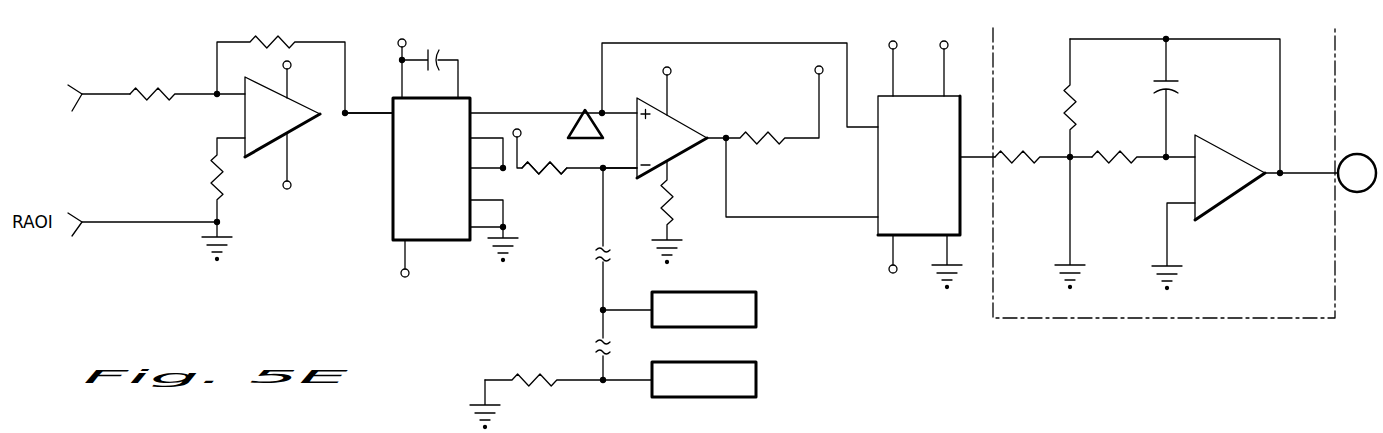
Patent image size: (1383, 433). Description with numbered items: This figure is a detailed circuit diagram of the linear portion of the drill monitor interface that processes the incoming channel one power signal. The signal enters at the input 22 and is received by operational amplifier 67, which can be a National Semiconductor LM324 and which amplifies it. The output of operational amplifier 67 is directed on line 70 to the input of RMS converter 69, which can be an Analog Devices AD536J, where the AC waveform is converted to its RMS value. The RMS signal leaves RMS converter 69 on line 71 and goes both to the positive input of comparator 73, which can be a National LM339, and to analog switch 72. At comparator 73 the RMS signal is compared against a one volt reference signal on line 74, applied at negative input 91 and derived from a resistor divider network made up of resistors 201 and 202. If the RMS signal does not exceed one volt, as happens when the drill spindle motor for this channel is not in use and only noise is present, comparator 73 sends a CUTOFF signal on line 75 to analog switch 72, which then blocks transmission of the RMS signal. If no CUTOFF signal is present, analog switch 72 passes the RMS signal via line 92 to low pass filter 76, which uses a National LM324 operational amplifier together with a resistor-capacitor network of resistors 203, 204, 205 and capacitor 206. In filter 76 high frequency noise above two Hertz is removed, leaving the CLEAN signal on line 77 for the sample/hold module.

The channel 1 power input signal 22 is at (85, 93).
The operational amplifier 67 is at (258, 150).
The line 70 is at (368, 113).
The RMS converter 69 is at (393, 205).
The line 71 is at (576, 108).
The line 74 is at (572, 168).
The resistor 201 is at (587, 170).
The resistor 202 is at (527, 385).
The comparator 73 is at (690, 128).
The negative input 91 is at (637, 173).
The line 75 is at (815, 217).
The analog switch 72 is at (960, 205).
The line 92 is at (963, 158).
The resistor 203 is at (1003, 160).
The resistor 204 is at (1074, 92).
The resistor 205 is at (1098, 153).
The capacitor 206 is at (1175, 80).
The low pass filter 76 is at (1159, 163).
The line 77 is at (1300, 172).